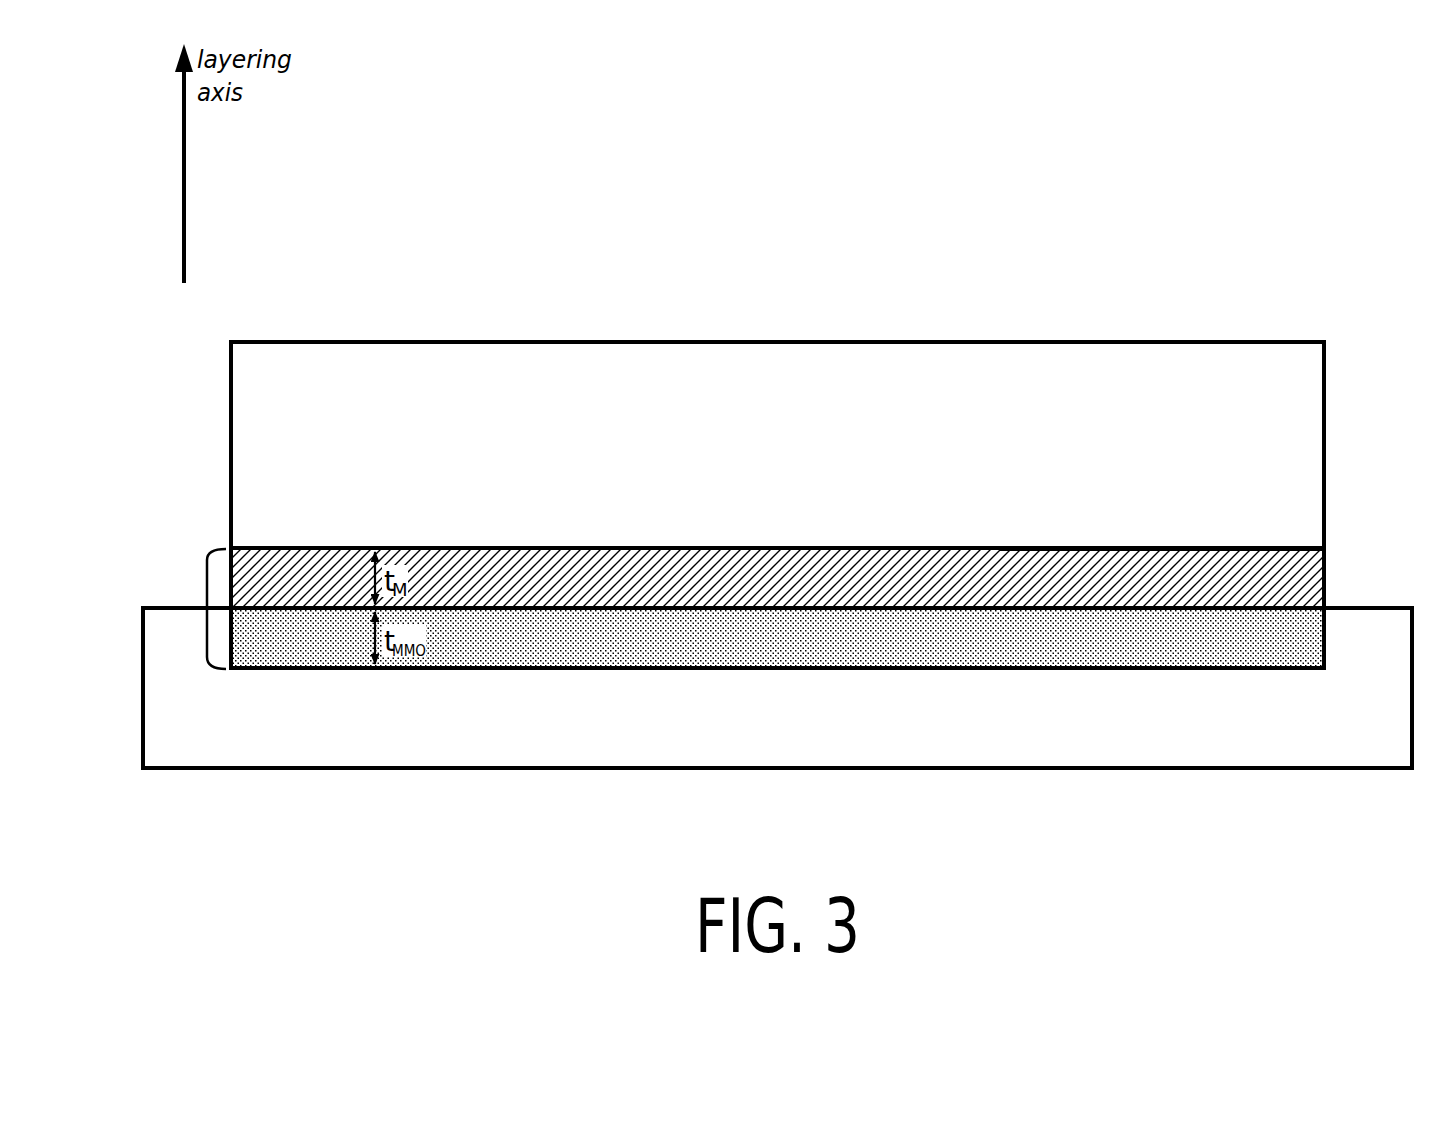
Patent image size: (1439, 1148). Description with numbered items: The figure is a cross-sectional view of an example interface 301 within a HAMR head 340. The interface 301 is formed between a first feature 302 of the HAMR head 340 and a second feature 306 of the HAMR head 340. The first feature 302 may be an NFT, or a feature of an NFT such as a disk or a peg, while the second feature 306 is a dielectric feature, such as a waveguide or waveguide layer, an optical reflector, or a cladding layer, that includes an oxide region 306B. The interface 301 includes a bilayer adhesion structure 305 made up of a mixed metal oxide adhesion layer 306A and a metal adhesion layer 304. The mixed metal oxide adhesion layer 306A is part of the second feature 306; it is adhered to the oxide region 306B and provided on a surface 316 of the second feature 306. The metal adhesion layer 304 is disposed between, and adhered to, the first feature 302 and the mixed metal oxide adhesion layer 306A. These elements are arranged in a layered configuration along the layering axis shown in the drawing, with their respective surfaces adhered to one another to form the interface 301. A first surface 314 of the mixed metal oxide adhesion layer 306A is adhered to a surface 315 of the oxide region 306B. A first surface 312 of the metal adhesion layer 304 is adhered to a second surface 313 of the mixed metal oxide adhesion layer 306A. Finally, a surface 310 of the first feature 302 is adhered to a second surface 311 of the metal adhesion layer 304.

The interface 301 is at (134, 537).
The first feature 302 is at (802, 465).
The metal adhesion layer 304 is at (802, 597).
The bilayer adhesion structure 305 is at (207, 583).
The second feature 306 is at (212, 718).
The mixed metal oxide adhesion layer 306A is at (813, 652).
The oxide region 306B is at (813, 737).
The surface of first feature 310 is at (961, 542).
The second surface of metal adhesion layer 311 is at (1093, 555).
The first surface of metal adhesion layer 312 is at (1223, 602).
The second surface of mixed metal oxide adhesion layer 313 is at (1021, 615).
The first surface of mixed metal oxide adhesion layer 314 is at (1186, 662).
The surface of oxide region 315 is at (1241, 673).
The surface of second feature 316 is at (1353, 604).
The HAMR head 340 is at (1380, 298).